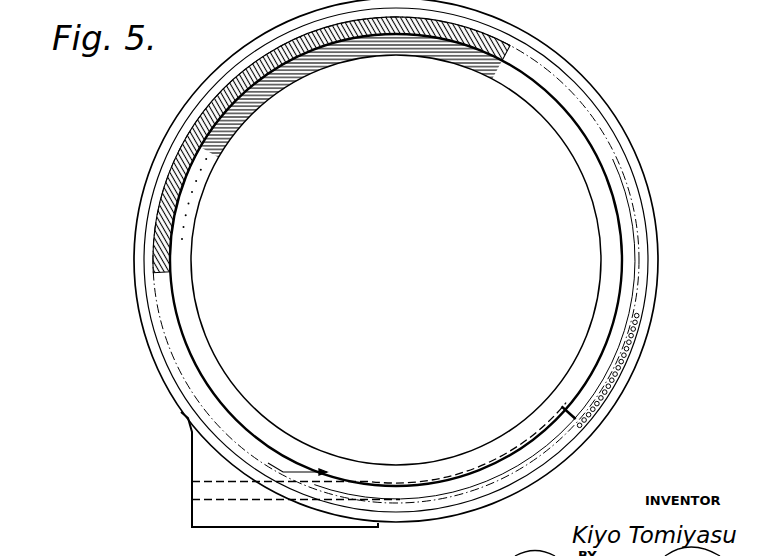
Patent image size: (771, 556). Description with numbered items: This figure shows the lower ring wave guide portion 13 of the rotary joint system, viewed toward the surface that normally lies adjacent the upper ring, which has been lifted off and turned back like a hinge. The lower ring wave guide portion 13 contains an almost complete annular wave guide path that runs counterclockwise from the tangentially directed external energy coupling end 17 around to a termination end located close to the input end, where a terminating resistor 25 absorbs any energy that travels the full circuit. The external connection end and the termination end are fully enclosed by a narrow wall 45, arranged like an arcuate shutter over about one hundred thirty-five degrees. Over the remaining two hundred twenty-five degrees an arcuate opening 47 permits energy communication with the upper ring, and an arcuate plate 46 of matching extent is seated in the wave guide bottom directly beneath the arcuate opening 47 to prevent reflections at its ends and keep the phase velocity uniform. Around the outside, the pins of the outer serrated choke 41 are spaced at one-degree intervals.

The lower ring wave guide portion 13 is at (658, 211).
The external energy coupling end 17 is at (190, 487).
The terminating resistor 25 is at (272, 460).
The outer serrated choke 41 is at (615, 375).
The narrow wall 45 is at (462, 482).
The arcuate plate 46 is at (243, 83).
The arcuate opening 47 is at (617, 323).